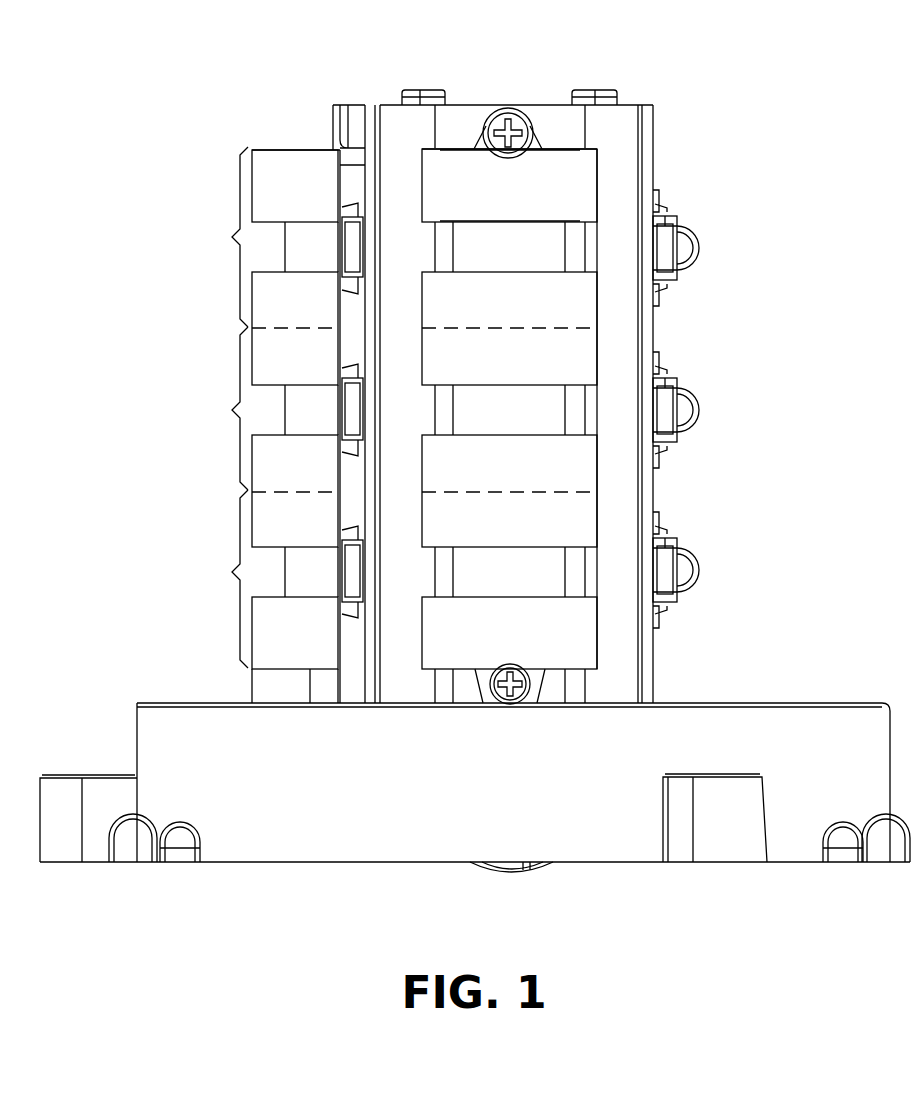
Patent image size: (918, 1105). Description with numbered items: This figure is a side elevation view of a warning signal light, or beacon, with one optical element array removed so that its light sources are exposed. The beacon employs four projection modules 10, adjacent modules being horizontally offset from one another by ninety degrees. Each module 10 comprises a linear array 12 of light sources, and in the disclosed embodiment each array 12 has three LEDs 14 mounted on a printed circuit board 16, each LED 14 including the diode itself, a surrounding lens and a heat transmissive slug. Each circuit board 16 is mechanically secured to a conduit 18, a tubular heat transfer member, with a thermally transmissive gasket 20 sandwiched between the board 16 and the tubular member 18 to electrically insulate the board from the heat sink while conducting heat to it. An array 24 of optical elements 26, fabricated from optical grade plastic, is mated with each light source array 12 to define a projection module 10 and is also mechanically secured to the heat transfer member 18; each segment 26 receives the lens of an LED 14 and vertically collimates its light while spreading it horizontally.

The projection module 10 is at (292, 143).
The linear array of light sources 12 is at (656, 666).
The LED 14 is at (705, 408).
The printed circuit board 16 is at (655, 160).
The conduit 18 is at (612, 318).
The thermally transmissive gasket 20 is at (638, 105).
The array of optical elements 24 is at (250, 190).
The optical element 26 is at (272, 425).